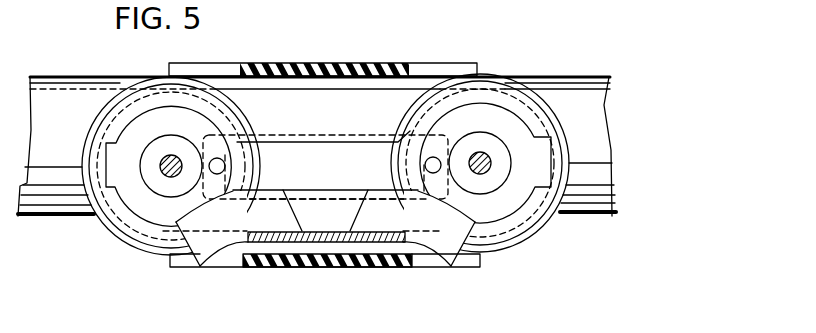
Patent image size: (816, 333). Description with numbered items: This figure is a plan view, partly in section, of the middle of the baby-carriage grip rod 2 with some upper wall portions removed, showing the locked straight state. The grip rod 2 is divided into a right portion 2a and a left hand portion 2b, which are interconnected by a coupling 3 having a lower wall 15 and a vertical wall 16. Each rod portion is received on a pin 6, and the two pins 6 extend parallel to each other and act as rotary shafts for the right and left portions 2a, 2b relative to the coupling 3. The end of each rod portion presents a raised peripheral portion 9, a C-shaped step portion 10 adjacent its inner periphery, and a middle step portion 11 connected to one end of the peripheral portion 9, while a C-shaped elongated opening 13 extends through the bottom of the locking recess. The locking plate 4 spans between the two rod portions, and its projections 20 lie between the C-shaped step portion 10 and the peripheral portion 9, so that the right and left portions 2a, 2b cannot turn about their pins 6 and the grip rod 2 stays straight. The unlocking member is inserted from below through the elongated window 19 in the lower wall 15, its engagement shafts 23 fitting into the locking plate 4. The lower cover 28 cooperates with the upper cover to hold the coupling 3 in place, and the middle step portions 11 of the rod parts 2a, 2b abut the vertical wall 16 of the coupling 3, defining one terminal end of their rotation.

The grip rod 2 is at (580, 73).
The right portion 2a is at (594, 208).
The left hand portion 2b is at (58, 210).
The coupling 3 is at (231, 72).
The locking plate 4 is at (357, 139).
The pin 6 is at (166, 172).
The peripheral portion 9 is at (145, 247).
The C-shaped step portion 10 is at (132, 113).
The middle step portion 11 is at (277, 220).
The C-shaped elongated opening 13 is at (197, 200).
The lower wall 15 is at (287, 107).
The vertical wall 16 is at (327, 238).
The window 19 is at (322, 130).
The projection 20 is at (108, 163).
The engagement shaft 23 is at (205, 140).
The lower cover 28 is at (232, 262).